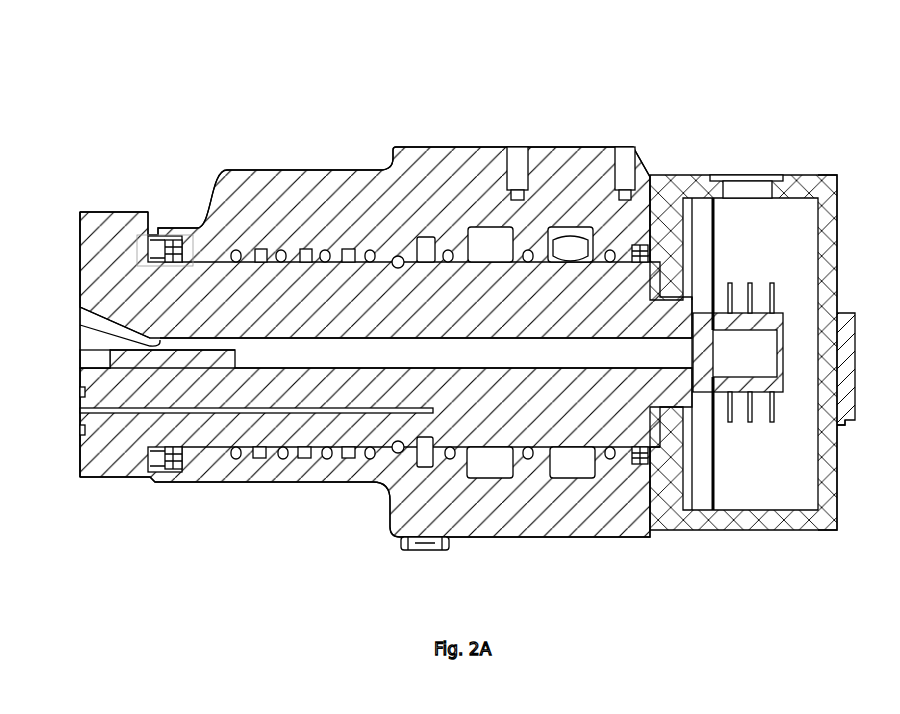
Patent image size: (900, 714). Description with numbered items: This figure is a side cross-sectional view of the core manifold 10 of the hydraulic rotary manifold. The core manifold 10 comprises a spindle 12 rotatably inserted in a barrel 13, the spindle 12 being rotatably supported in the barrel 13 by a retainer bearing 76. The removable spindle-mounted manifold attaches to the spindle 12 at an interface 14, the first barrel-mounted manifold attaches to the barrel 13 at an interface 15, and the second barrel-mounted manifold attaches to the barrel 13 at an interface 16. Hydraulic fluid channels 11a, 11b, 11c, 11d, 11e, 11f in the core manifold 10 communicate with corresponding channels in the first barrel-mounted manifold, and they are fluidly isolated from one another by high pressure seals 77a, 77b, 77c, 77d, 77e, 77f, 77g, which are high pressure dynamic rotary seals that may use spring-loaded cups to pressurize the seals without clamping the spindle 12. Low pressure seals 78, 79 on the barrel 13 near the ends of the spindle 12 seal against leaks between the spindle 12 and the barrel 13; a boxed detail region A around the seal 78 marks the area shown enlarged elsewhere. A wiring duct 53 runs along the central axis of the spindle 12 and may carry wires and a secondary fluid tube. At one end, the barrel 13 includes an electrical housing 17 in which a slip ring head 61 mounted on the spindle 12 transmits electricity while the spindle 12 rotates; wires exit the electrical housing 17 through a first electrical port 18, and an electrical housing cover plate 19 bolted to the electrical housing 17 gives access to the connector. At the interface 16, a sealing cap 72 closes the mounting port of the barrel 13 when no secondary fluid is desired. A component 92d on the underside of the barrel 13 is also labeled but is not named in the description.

The core manifold 10 is at (262, 72).
The hydraulic fluid channel 11a is at (495, 470).
The hydraulic fluid channel 11b is at (327, 460).
The hydraulic fluid channel 11c is at (565, 470).
The hydraulic fluid channel 11d is at (425, 468).
The hydraulic fluid channel 11e is at (237, 460).
The hydraulic fluid channel 11f is at (283, 460).
The spindle 12 is at (105, 218).
The barrel 13 is at (212, 484).
The interface 14 is at (80, 250).
The interface 15 is at (415, 147).
The interface 16 is at (845, 426).
The electrical housing 17 is at (682, 178).
The first electrical port 18 is at (745, 176).
The electrical housing cover plate 19 is at (835, 210).
The wiring duct 53 is at (160, 358).
The slip ring head 61 is at (762, 385).
The sealing cap 72 is at (855, 330).
The retainer bearing 76 is at (397, 453).
The high pressure seal 77a is at (610, 250).
The high pressure seal 77b is at (528, 250).
The high pressure seal 77c is at (448, 250).
The high pressure seal 77d is at (370, 250).
The high pressure seal 77e is at (325, 250).
The high pressure seal 77f is at (281, 250).
The high pressure seal 77g is at (236, 250).
The low pressure seal 78 is at (174, 240).
The low pressure seal 79 is at (640, 245).
The fitting 92d is at (428, 551).
The detail region A is at (160, 238).